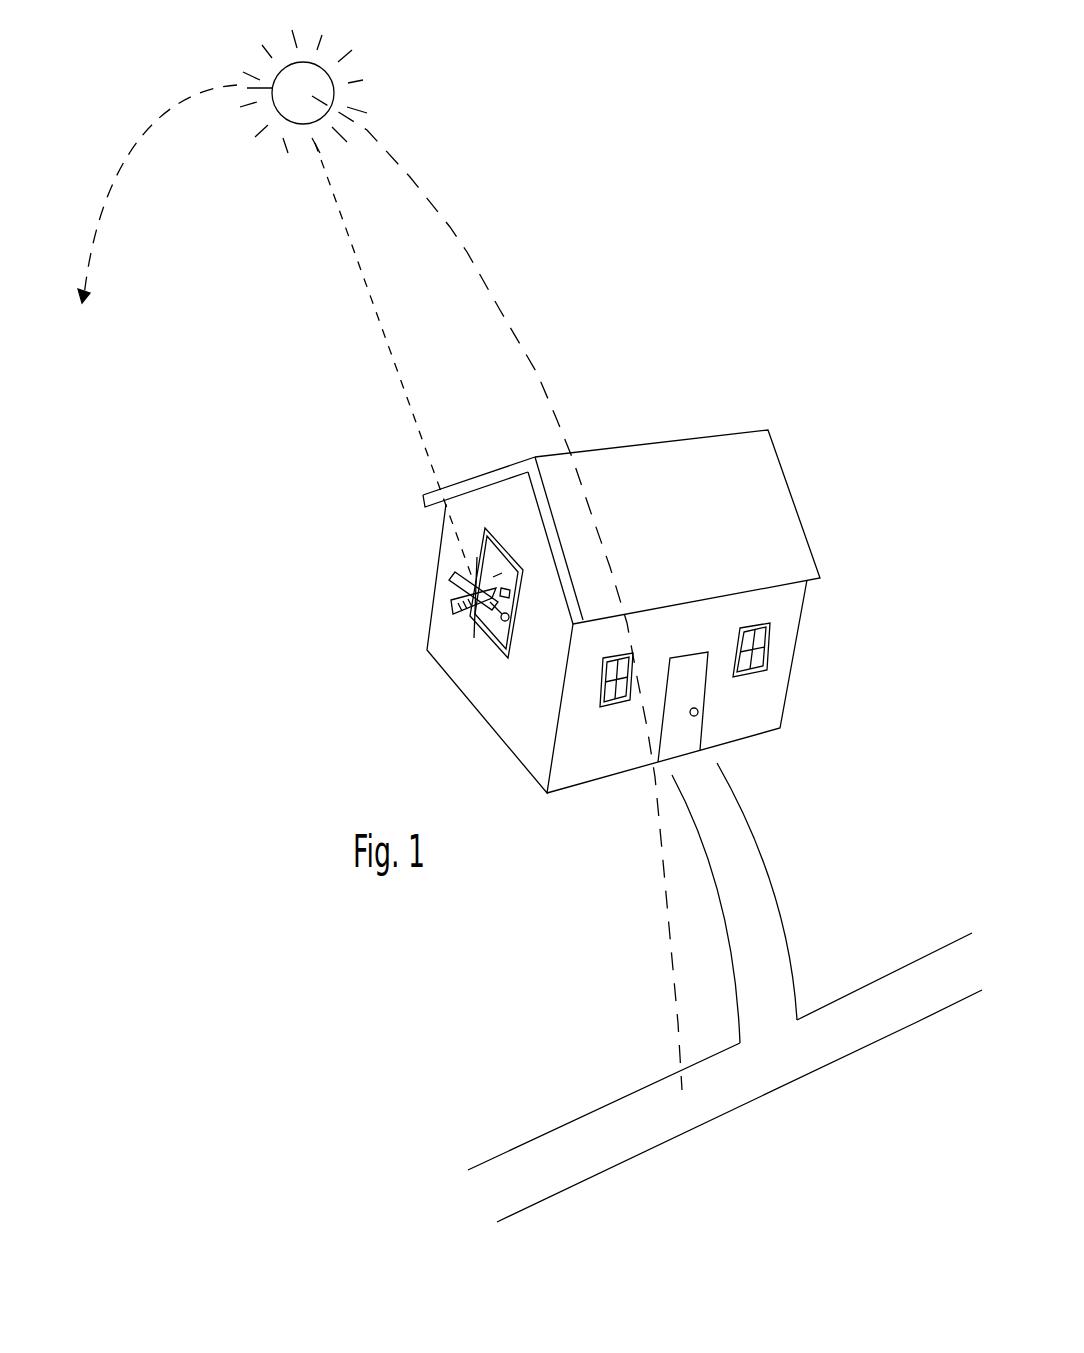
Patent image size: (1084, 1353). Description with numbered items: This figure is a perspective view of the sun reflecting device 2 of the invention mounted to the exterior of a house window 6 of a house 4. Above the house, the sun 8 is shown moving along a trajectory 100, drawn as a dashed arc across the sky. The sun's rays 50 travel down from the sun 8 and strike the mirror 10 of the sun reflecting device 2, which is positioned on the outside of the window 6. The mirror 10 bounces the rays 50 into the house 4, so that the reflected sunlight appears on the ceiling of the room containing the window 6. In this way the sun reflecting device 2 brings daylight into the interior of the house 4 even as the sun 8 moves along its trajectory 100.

The sun reflecting device 2 is at (452, 603).
The house 4 is at (802, 500).
The house window 6 is at (497, 553).
The sun 8 is at (318, 72).
The mirror 10 is at (488, 598).
The sun's rays 50 is at (378, 313).
The trajectory 100 is at (468, 253).